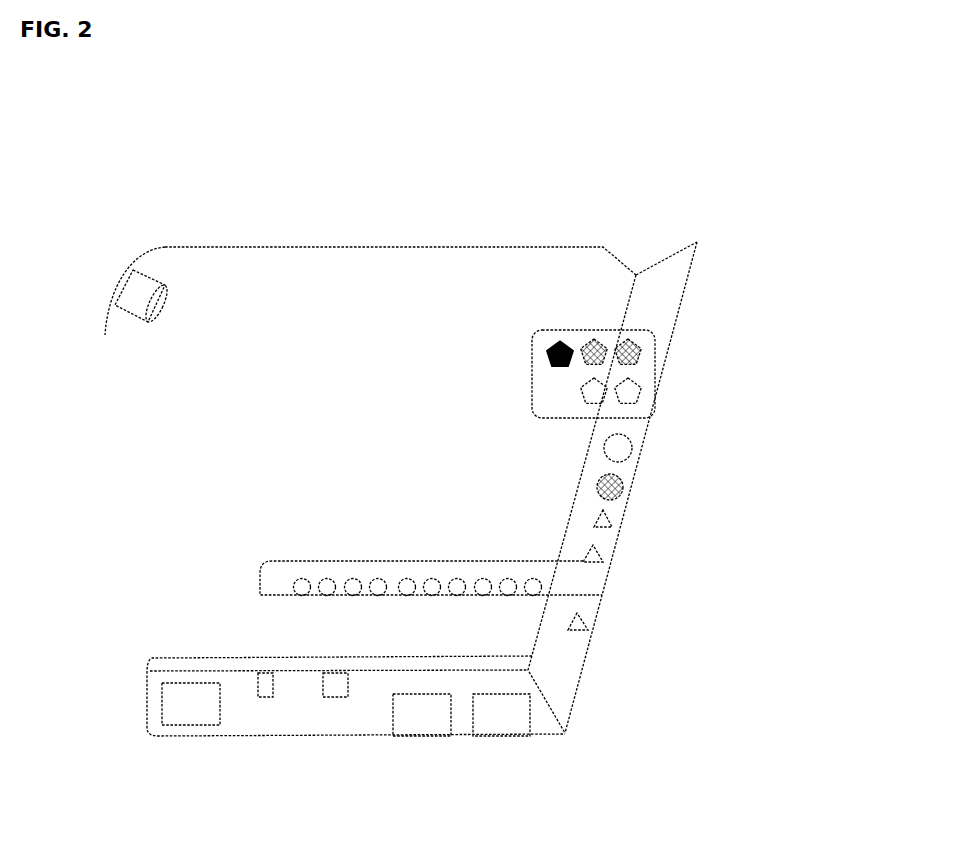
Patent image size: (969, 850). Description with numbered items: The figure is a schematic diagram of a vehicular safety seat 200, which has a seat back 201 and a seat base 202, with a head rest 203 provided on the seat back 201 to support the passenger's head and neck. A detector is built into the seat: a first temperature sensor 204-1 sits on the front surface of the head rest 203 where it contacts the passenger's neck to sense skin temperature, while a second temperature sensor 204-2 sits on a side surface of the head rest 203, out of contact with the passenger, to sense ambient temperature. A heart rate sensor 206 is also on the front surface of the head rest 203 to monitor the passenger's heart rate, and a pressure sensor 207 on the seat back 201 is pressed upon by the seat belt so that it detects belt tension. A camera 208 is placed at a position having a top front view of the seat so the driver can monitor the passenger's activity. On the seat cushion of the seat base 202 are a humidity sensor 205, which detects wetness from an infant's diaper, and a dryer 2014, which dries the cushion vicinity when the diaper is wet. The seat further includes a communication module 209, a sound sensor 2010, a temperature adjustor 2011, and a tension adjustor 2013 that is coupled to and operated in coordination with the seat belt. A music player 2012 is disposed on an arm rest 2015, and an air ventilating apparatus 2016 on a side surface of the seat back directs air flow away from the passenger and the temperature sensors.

The vehicular safety seat 200 is at (598, 203).
The seat back 201 is at (626, 517).
The seat base 202 is at (333, 740).
The head rest 203 is at (655, 345).
The first temperature sensor 204-1 is at (642, 353).
The second temperature sensor 204-2 is at (642, 392).
The humidity sensor 205 is at (268, 690).
The heart rate sensor 206 is at (558, 350).
The pressure sensor 207 is at (632, 446).
The camera 208 is at (150, 277).
The communication module 209 is at (178, 730).
The power supply 2010 is at (510, 738).
The temperature adjustor 2011 is at (412, 738).
The music player 2012 is at (378, 577).
The tension adjustor 2013 is at (623, 485).
The dryer 2014 is at (335, 685).
The arm rest 2015 is at (443, 557).
The air ventilating apparatus 2016 is at (600, 547).